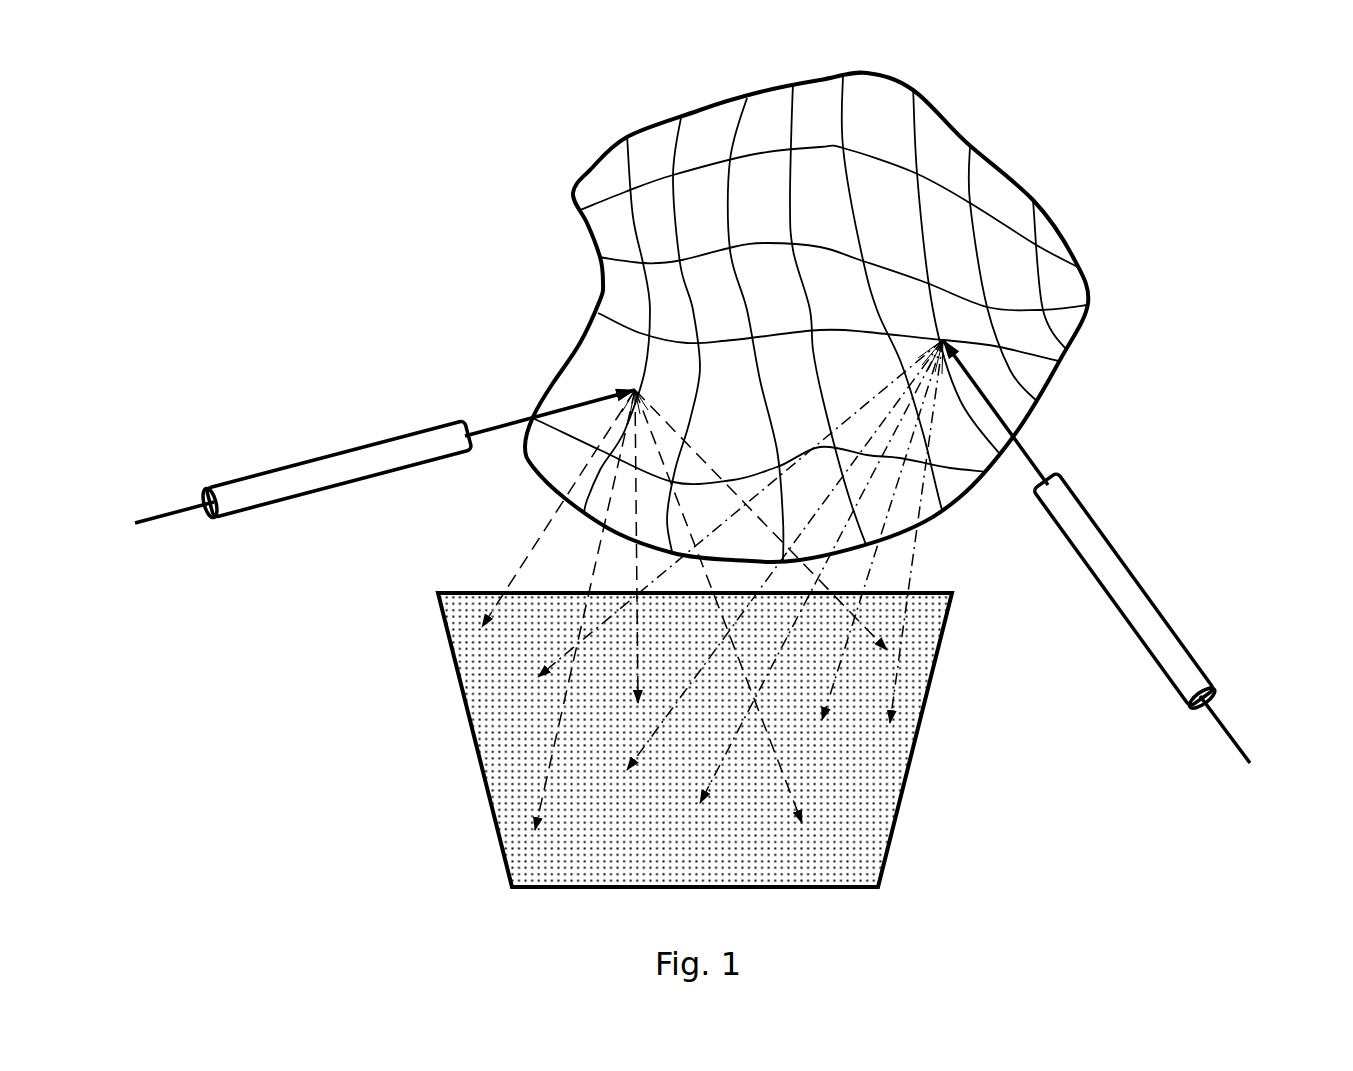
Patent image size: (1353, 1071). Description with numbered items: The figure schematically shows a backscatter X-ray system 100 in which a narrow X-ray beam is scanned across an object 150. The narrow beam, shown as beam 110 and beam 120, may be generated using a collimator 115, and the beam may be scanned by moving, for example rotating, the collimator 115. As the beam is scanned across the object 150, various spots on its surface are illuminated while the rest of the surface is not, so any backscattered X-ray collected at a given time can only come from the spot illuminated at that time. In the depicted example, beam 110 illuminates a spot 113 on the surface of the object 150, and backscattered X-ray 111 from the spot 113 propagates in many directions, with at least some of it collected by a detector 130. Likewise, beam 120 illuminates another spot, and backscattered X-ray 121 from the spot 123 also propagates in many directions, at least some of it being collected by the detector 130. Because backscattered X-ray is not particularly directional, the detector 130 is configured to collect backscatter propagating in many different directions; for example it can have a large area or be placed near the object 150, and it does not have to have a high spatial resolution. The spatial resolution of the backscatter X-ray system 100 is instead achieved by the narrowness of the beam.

The backscatter X-ray system 100 is at (198, 150).
The beam 110 is at (500, 418).
The backscattered X-ray 111 is at (595, 562).
The spot 113 is at (628, 382).
The collimator 115 is at (298, 458).
The beam 120 is at (1040, 460).
The backscattered X-ray 121 is at (887, 513).
The spot 123 is at (949, 337).
The detector 130 is at (915, 772).
The object 150 is at (1083, 261).